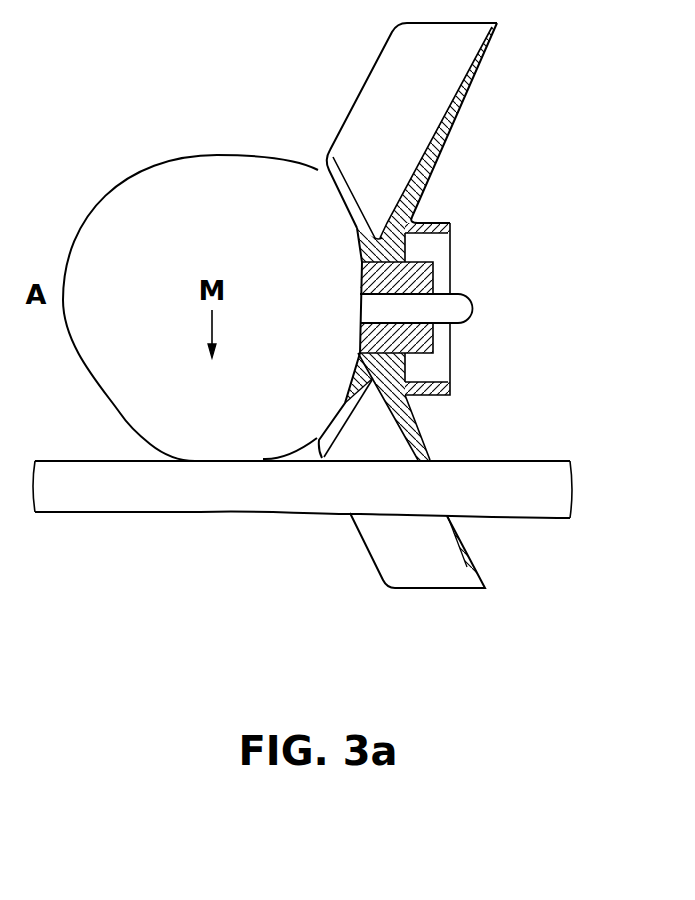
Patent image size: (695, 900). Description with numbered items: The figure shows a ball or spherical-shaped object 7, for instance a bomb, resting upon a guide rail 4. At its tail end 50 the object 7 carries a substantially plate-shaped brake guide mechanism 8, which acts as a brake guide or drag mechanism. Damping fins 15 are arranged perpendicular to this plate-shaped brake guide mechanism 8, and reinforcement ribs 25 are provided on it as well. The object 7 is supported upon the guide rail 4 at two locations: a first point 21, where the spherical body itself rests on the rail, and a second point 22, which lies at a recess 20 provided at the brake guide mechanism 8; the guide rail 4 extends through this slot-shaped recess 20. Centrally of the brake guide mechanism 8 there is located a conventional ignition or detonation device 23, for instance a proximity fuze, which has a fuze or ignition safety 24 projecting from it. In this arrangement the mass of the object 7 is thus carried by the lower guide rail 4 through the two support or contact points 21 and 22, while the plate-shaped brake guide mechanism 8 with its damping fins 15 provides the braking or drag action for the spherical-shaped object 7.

The spherical-shaped object 7 is at (127, 395).
The damping fins 15 is at (382, 83).
The reinforcement ribs 25 is at (467, 86).
The brake guide mechanism 8 is at (427, 162).
The tail end 50 is at (390, 363).
The ignition device 23 is at (413, 272).
The ignition safety 24 is at (438, 303).
The guide rail 4 is at (298, 490).
The first point 21 is at (247, 462).
The second point 22 is at (420, 462).
The recess 20 is at (467, 542).